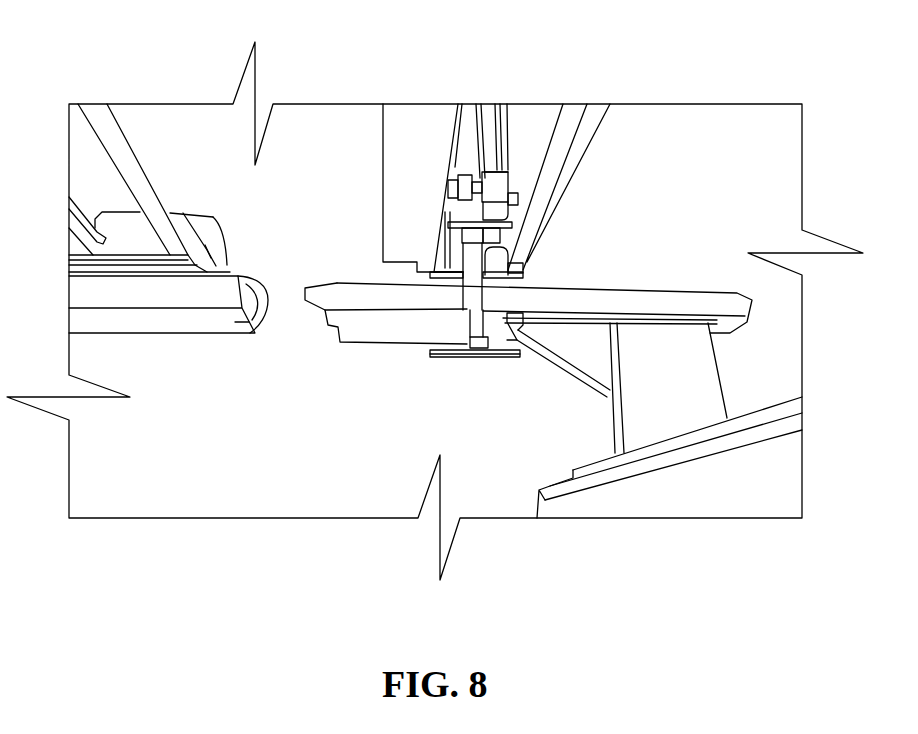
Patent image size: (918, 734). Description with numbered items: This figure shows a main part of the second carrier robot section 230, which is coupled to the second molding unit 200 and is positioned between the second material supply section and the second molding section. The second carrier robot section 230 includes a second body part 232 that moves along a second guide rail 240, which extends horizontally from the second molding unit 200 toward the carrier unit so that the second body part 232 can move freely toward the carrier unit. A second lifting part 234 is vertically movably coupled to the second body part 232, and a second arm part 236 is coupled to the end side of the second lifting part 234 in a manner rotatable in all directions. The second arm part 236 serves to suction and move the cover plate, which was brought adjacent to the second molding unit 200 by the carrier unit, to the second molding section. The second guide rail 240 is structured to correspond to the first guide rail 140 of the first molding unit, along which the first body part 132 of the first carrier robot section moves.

The first body part 132 is at (115, 130).
The first guide rail 140 is at (198, 298).
The second molding unit 200 is at (663, 478).
The second carrier robot section 230 is at (597, 167).
The second body part 232 is at (420, 125).
The second lifting part 234 is at (485, 113).
The second arm part 236 is at (447, 357).
The second guide rail 240 is at (378, 293).